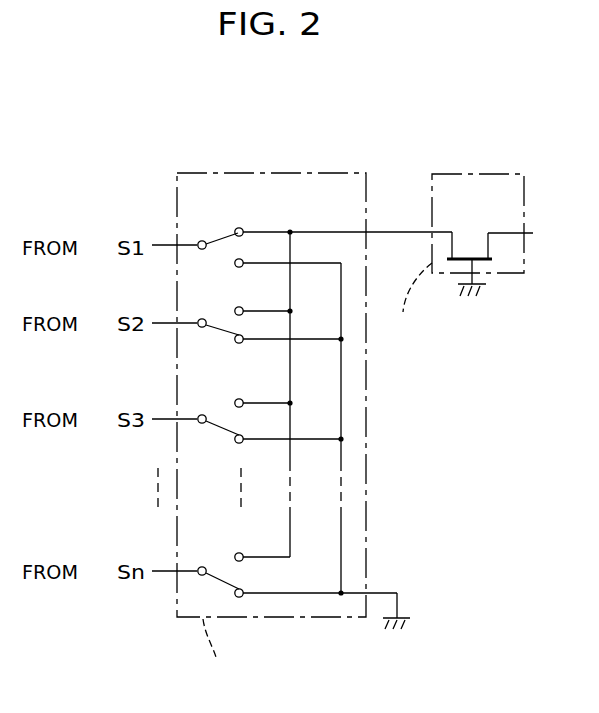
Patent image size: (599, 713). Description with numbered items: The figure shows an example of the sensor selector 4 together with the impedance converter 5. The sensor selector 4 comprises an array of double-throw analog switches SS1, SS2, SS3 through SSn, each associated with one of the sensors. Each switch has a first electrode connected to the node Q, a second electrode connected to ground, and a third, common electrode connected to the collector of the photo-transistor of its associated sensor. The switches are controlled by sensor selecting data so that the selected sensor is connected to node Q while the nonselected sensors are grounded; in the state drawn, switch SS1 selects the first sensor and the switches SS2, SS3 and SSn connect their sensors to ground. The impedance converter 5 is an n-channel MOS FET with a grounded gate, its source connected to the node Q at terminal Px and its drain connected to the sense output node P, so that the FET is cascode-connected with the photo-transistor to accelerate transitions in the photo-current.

The sensor selector 4 is at (292, 173).
The impedance converter 5 is at (488, 174).
The double-throw analog switch SS1 is at (213, 239).
The double-throw analog switch SS2 is at (213, 316).
The double-throw analog switch SS3 is at (213, 414).
The double-throw analog switch SSn is at (213, 567).
The input terminal Px is at (426, 226).
The sense output node P is at (516, 226).